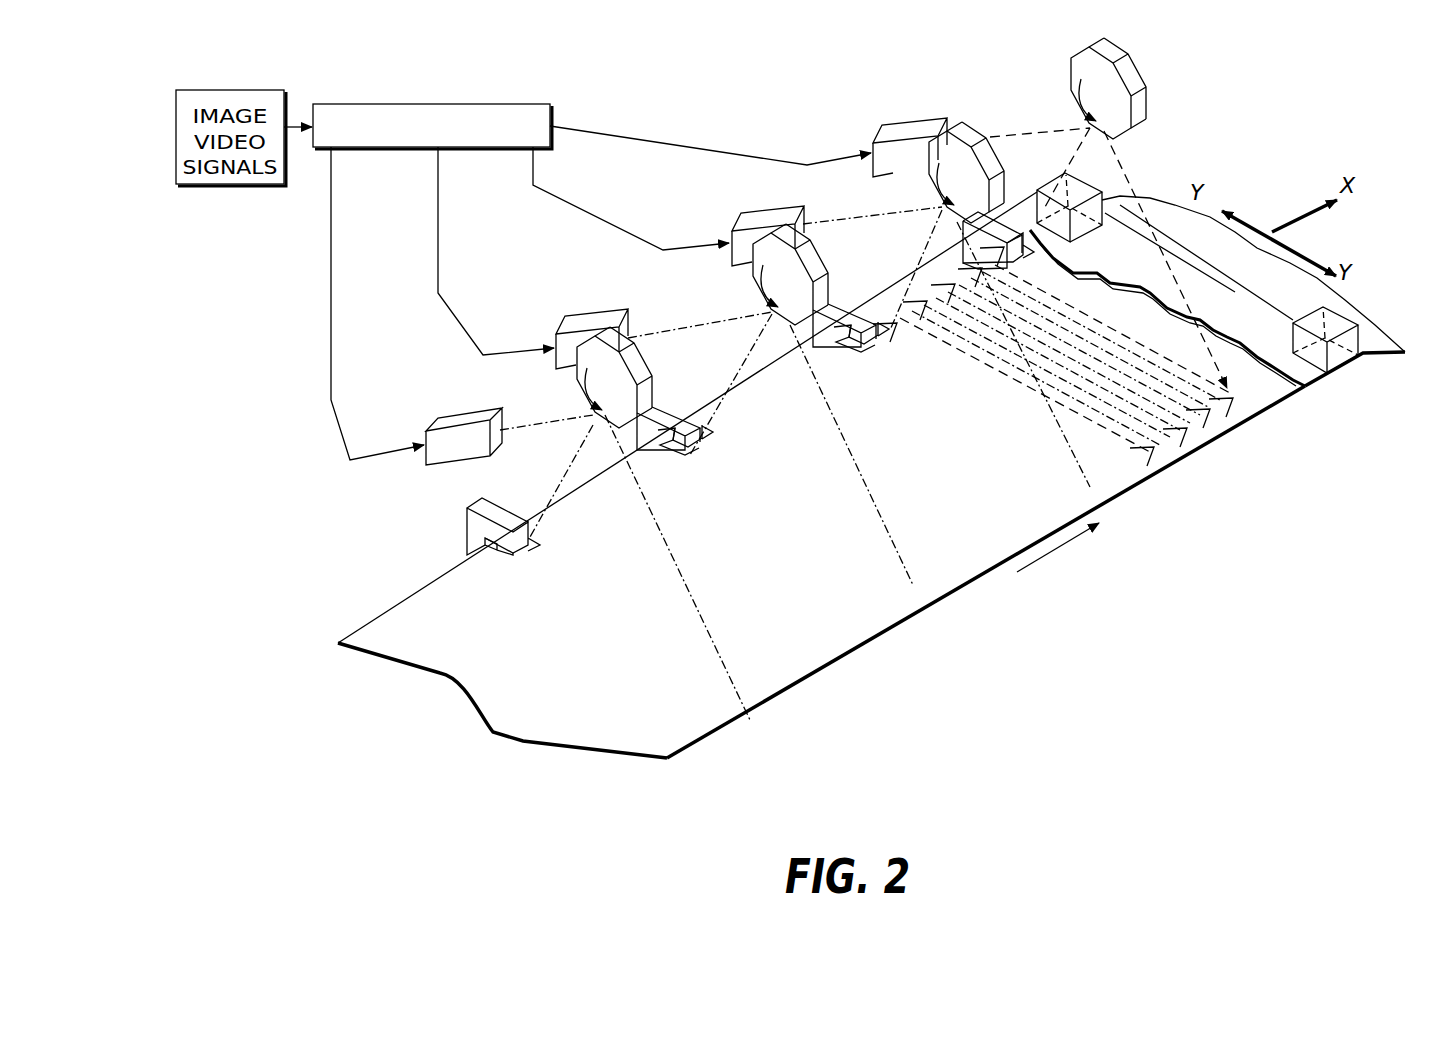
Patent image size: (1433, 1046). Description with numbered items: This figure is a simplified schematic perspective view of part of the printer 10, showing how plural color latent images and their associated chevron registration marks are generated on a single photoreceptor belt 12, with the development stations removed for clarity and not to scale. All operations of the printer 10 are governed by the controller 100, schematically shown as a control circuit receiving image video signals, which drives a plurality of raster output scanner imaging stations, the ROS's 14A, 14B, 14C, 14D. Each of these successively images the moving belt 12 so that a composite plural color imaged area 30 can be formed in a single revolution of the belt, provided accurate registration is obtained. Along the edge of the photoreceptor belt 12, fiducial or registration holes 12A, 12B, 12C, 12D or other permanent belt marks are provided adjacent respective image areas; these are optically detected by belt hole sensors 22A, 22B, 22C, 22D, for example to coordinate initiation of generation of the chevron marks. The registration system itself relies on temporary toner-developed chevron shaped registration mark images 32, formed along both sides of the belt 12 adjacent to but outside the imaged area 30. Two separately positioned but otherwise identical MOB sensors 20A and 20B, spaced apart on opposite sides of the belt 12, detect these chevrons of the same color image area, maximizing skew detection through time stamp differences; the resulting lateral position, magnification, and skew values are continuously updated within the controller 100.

The printer 10 is at (1254, 548).
The photoreceptor belt 12 is at (845, 632).
The registration hole 12A is at (1059, 257).
The registration hole 12B is at (882, 328).
The registration hole 12C is at (712, 437).
The registration hole 12D is at (528, 544).
The ROS 14A is at (946, 102).
The ROS 14B is at (800, 191).
The ROS 14C is at (642, 305).
The ROS 14D is at (492, 404).
The MOB sensor 20A is at (1337, 325).
The MOB sensor 20B is at (1087, 190).
The belt hole sensor 22A is at (970, 240).
The belt hole sensor 22B is at (843, 328).
The belt hole sensor 22C is at (673, 428).
The belt hole sensor 22D is at (490, 528).
The composite plural color imaged area 30 is at (1119, 420).
The chevron shaped toner registration mark images 32 is at (967, 268).
The controller 100 is at (547, 105).